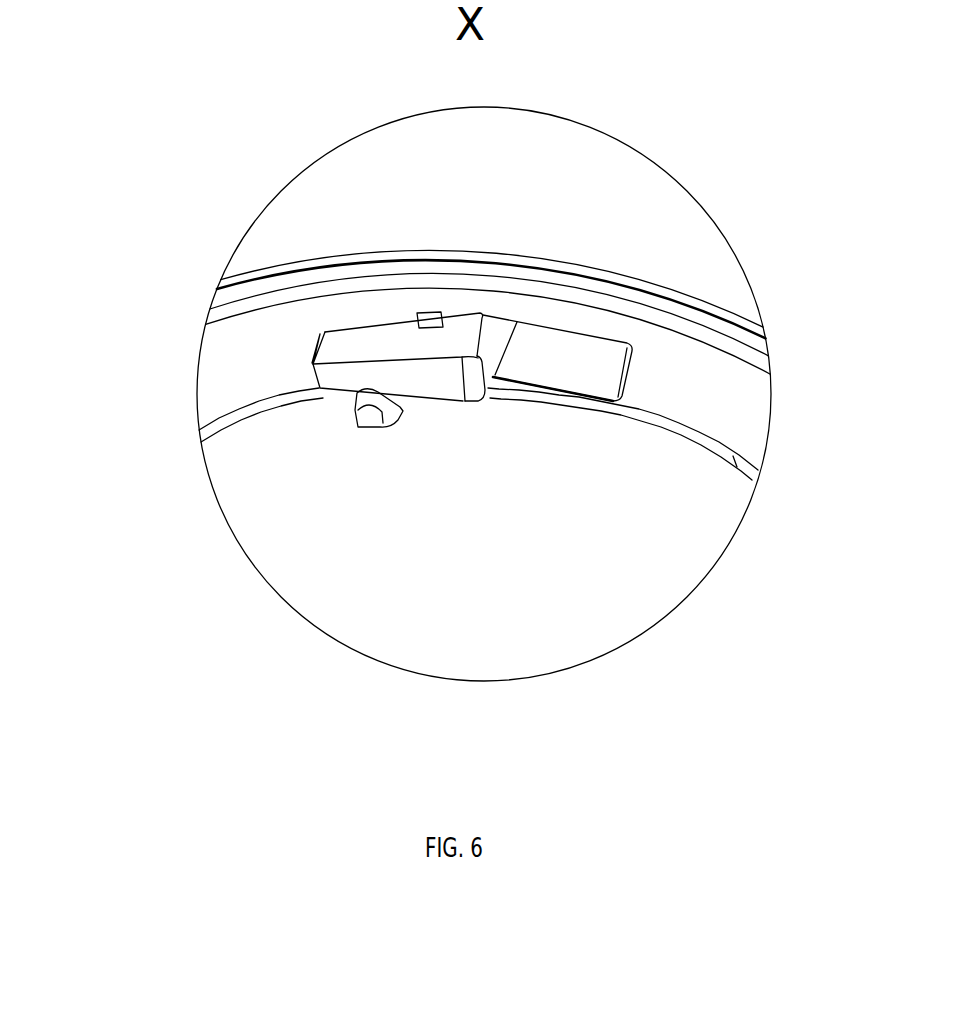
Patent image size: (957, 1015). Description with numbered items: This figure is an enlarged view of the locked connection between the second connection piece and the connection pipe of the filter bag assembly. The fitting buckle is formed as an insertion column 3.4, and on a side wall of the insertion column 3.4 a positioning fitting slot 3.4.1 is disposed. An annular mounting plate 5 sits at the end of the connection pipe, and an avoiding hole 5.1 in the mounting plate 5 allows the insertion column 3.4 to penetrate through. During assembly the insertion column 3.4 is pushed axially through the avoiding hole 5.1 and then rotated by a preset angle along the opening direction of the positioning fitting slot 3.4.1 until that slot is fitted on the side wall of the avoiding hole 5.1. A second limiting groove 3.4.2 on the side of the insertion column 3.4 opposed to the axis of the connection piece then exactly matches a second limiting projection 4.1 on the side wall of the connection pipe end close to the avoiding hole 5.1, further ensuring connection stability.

The insertion column 3.4 is at (331, 242).
The positioning fitting slot 3.4.1 is at (434, 318).
The second limiting groove 3.4.2 is at (318, 380).
The second limiting projection 4.1 is at (368, 400).
The mounting plate 5 is at (717, 398).
The avoiding hole 5.1 is at (577, 348).